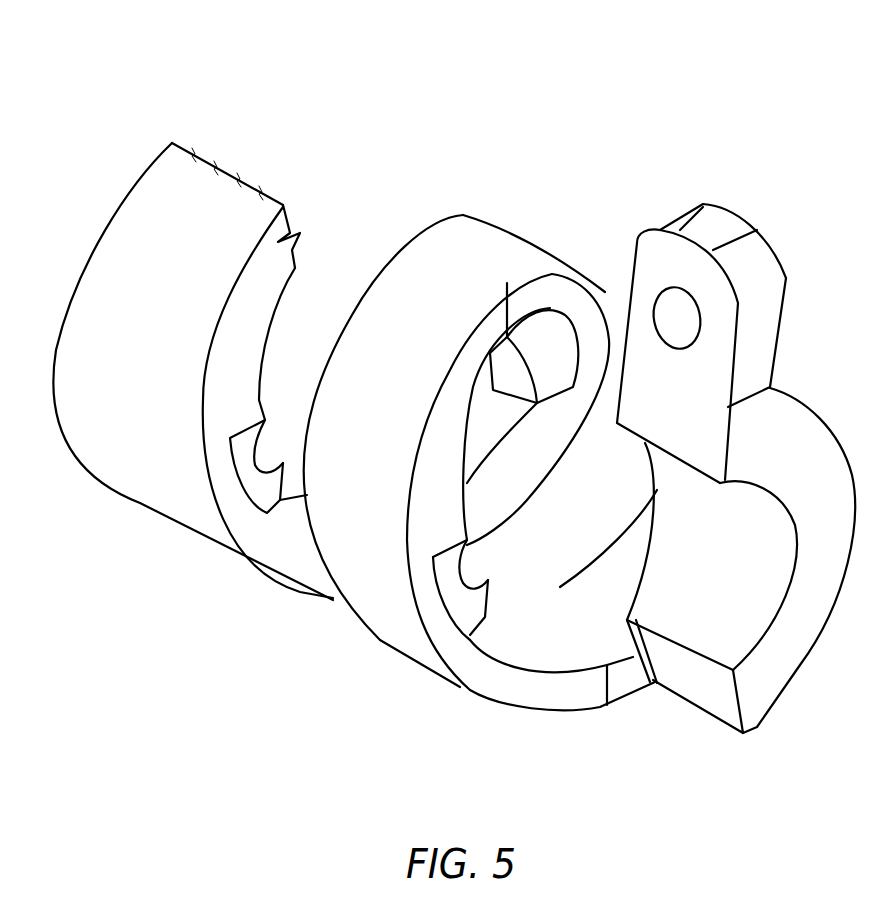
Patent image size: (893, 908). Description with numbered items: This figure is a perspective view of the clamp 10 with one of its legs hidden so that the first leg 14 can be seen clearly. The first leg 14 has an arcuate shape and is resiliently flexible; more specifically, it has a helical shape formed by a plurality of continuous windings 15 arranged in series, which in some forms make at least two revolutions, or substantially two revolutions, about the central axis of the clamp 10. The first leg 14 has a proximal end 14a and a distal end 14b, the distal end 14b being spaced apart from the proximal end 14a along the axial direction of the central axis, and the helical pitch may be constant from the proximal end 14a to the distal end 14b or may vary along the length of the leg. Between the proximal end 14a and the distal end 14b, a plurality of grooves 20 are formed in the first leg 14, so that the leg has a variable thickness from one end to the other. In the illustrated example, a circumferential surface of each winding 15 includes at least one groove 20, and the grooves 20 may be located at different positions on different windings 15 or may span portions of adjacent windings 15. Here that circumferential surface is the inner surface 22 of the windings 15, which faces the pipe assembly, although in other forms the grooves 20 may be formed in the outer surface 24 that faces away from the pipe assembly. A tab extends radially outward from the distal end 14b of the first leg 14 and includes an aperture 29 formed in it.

The clamp 10 is at (448, 400).
The first leg 14 is at (448, 400).
The proximal end 14a is at (165, 195).
The distal end 14b is at (760, 440).
The windings 15 is at (130, 323).
The grooves 20 is at (567, 320).
The inner surface 22 is at (745, 578).
The outer surface 24 is at (455, 245).
The aperture 29 is at (683, 317).